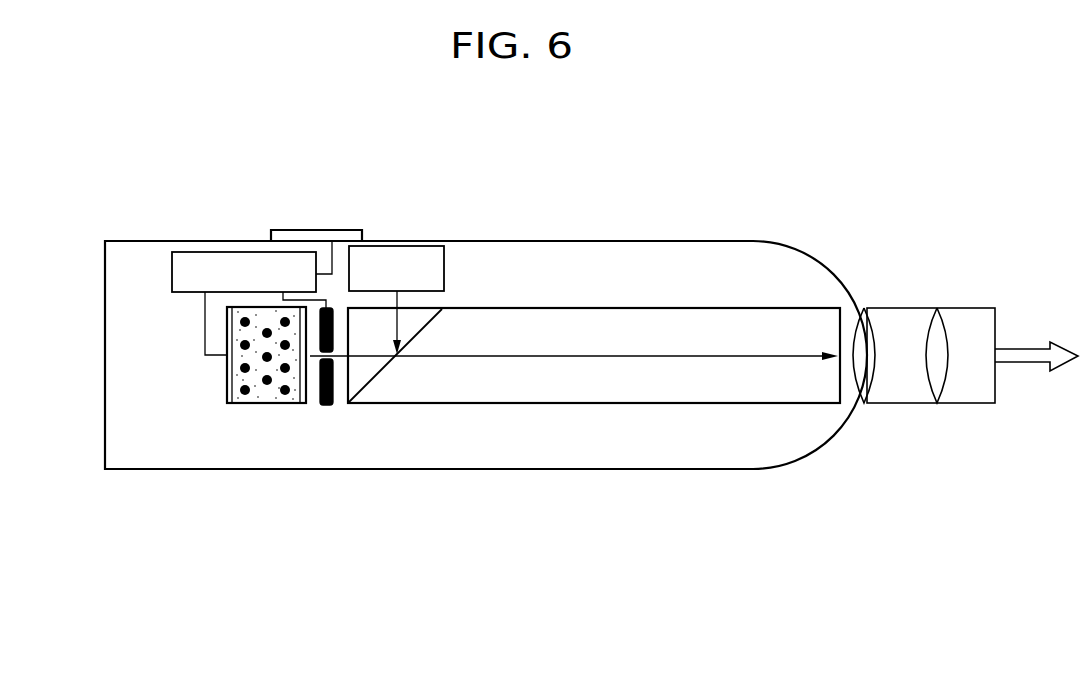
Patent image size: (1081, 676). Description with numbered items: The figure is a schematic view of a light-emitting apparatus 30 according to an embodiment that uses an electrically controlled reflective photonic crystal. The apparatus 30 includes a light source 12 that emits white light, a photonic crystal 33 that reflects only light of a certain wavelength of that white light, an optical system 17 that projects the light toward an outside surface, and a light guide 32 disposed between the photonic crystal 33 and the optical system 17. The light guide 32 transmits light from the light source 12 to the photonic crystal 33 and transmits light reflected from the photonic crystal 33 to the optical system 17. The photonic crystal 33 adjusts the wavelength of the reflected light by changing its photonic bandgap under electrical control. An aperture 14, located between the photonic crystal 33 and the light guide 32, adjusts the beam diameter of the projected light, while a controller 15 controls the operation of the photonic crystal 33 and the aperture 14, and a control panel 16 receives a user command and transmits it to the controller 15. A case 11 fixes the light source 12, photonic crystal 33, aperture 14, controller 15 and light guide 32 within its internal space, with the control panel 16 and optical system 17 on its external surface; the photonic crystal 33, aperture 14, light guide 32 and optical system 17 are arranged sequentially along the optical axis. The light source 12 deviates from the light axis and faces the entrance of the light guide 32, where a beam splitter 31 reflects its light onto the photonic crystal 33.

The case 11 is at (155, 470).
The light source 12 is at (421, 261).
The aperture 14 is at (325, 403).
The controller 15 is at (200, 250).
The control panel 16 is at (338, 230).
The optical system 17 is at (928, 330).
The light-emitting apparatus 30 is at (235, 488).
The beam splitter 31 is at (372, 383).
The light guide 32 is at (572, 403).
The photonic crystal 33 is at (285, 397).